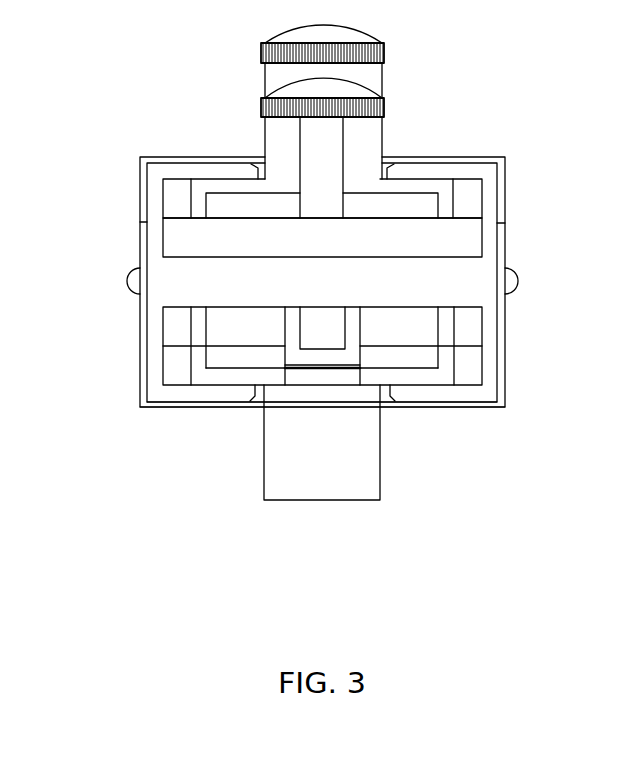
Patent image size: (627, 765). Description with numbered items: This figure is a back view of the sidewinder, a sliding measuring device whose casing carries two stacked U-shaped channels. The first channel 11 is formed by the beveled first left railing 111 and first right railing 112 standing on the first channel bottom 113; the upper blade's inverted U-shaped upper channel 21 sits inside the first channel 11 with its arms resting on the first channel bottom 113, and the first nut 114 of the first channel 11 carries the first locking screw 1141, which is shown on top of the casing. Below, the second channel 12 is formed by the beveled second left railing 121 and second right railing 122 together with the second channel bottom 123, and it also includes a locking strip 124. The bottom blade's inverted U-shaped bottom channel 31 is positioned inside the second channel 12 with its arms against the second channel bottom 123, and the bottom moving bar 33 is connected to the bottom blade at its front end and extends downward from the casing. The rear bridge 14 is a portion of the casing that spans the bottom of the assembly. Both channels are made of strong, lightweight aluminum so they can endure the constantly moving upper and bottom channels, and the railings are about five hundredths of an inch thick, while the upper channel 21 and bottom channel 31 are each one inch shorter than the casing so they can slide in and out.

The first channel 11 is at (237, 170).
The first left railing 111 is at (153, 238).
The first right railing 112 is at (488, 237).
The first channel bottom 113 is at (408, 255).
The first nut 114 is at (262, 233).
The first locking screw 1141 is at (288, 87).
The upper channel 21 is at (198, 194).
The second channel 12 is at (183, 393).
The second left railing 121 is at (153, 346).
The second right railing 122 is at (487, 365).
The second channel bottom 123 is at (427, 308).
The locking strip 124 is at (350, 348).
The bottom channel 31 is at (303, 377).
The bottom moving bar 33 is at (352, 480).
The rear bridge 14 is at (257, 403).